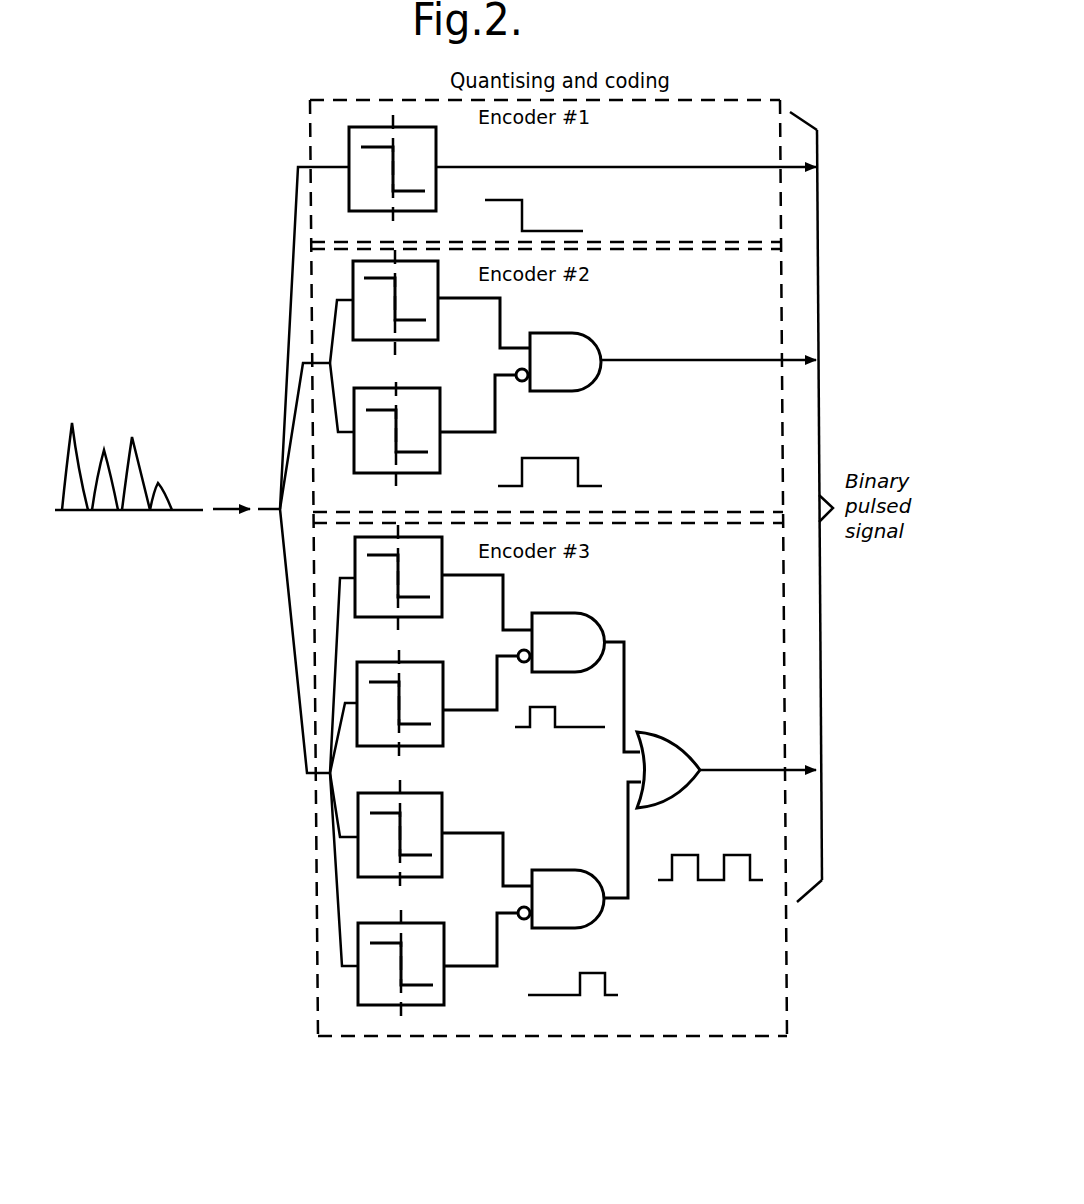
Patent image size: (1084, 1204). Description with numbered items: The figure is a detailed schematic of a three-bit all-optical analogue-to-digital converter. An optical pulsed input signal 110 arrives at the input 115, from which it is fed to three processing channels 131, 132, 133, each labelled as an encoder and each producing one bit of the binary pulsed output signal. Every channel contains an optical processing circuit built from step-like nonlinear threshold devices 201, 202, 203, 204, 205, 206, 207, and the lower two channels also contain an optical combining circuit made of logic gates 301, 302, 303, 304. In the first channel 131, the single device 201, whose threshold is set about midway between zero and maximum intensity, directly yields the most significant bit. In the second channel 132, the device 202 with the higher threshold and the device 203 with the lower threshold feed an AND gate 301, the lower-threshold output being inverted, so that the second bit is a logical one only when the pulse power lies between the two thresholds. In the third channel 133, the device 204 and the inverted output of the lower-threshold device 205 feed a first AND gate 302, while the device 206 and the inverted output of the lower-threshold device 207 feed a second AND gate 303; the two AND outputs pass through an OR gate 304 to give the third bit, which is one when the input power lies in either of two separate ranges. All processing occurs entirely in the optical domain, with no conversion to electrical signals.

The optical input signal 110 is at (78, 445).
The input 115 is at (273, 505).
The optical processing circuit (nonlinear device with threshold T4) 201 is at (349, 152).
The optical processing circuit (nonlinear device with threshold T6) 202 is at (353, 275).
The optical processing circuit (nonlinear device with threshold T2) 203 is at (354, 448).
The optical processing circuit (nonlinear device with threshold T3) 204 is at (355, 597).
The optical processing circuit (nonlinear device with threshold T1) 205 is at (357, 727).
The optical processing circuit (nonlinear device with threshold T7) 206 is at (358, 860).
The optical processing circuit (nonlinear device with threshold T5) 207 is at (358, 987).
The optical combining circuit (AND gate) 301 is at (600, 380).
The optical combining circuit (AND gate) 302 is at (600, 620).
The optical combining circuit (AND gate) 303 is at (603, 915).
The optical combining circuit (OR gate) 304 is at (690, 790).
The processing channel 131 is at (780, 197).
The processing channel 132 is at (782, 303).
The processing channel 133 is at (782, 672).